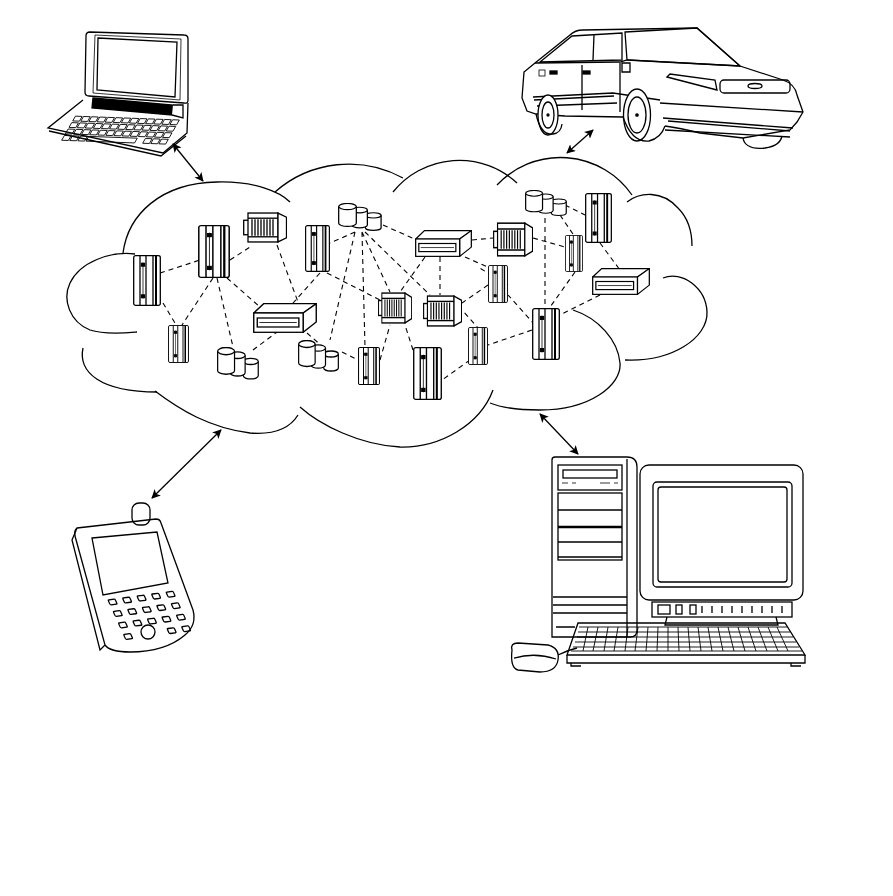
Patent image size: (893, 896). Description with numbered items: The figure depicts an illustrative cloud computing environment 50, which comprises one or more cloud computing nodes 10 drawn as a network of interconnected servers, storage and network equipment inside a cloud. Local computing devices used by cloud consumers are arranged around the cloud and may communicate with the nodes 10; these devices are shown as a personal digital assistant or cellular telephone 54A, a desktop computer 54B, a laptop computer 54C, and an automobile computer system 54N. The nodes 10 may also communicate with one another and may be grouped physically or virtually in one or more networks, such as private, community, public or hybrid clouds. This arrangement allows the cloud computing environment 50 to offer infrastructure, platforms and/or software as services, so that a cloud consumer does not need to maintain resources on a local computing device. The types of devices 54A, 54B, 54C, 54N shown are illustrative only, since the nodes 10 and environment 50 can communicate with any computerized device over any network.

The cloud computing nodes 10 is at (676, 300).
The cloud computing environment 50 is at (692, 246).
The personal digital assistant (PDA) or cellular telephone 54A is at (180, 572).
The desktop computer 54B is at (551, 556).
The laptop computer 54C is at (188, 72).
The automobile computer system 54N is at (531, 77).